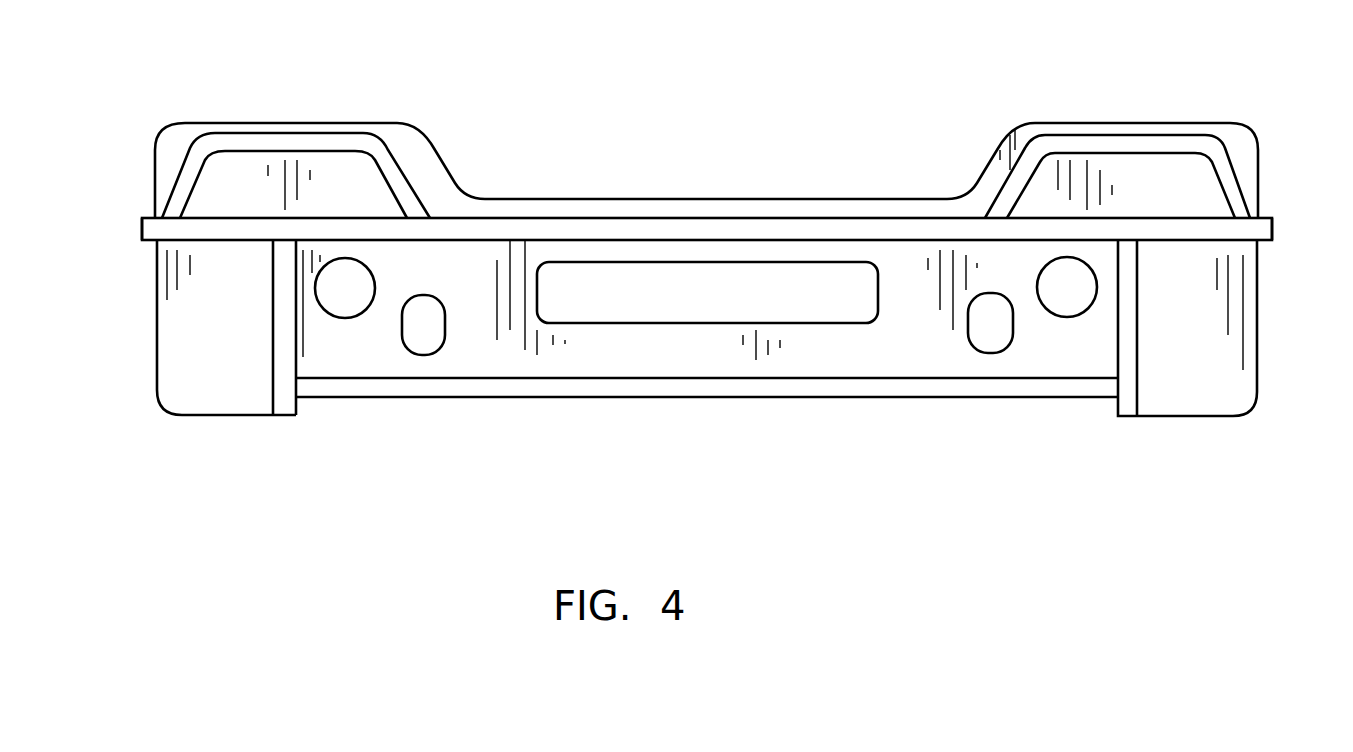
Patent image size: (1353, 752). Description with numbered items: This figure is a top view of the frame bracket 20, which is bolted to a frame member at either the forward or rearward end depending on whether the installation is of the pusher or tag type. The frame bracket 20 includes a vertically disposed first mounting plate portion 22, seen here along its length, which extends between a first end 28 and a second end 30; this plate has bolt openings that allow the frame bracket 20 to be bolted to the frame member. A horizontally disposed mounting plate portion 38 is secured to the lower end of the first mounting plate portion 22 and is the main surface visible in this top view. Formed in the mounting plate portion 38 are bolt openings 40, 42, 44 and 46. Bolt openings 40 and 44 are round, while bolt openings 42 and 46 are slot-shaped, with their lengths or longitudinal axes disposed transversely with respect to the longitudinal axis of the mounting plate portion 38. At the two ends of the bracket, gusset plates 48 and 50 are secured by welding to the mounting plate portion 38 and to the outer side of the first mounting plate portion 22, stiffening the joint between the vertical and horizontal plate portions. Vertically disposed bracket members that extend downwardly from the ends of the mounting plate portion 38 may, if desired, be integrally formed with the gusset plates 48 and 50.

The frame bracket 20 is at (740, 162).
The first mounting plate portion 22 is at (868, 222).
The first end 28 is at (1272, 228).
The second end 30 is at (142, 226).
The mounting plate portion 38 is at (725, 365).
The bolt opening 40 is at (1097, 295).
The bolt opening 42 is at (1013, 340).
The bolt opening 44 is at (372, 305).
The bolt opening 46 is at (445, 337).
The gusset plate 48 is at (1180, 322).
The gusset plate 50 is at (203, 327).